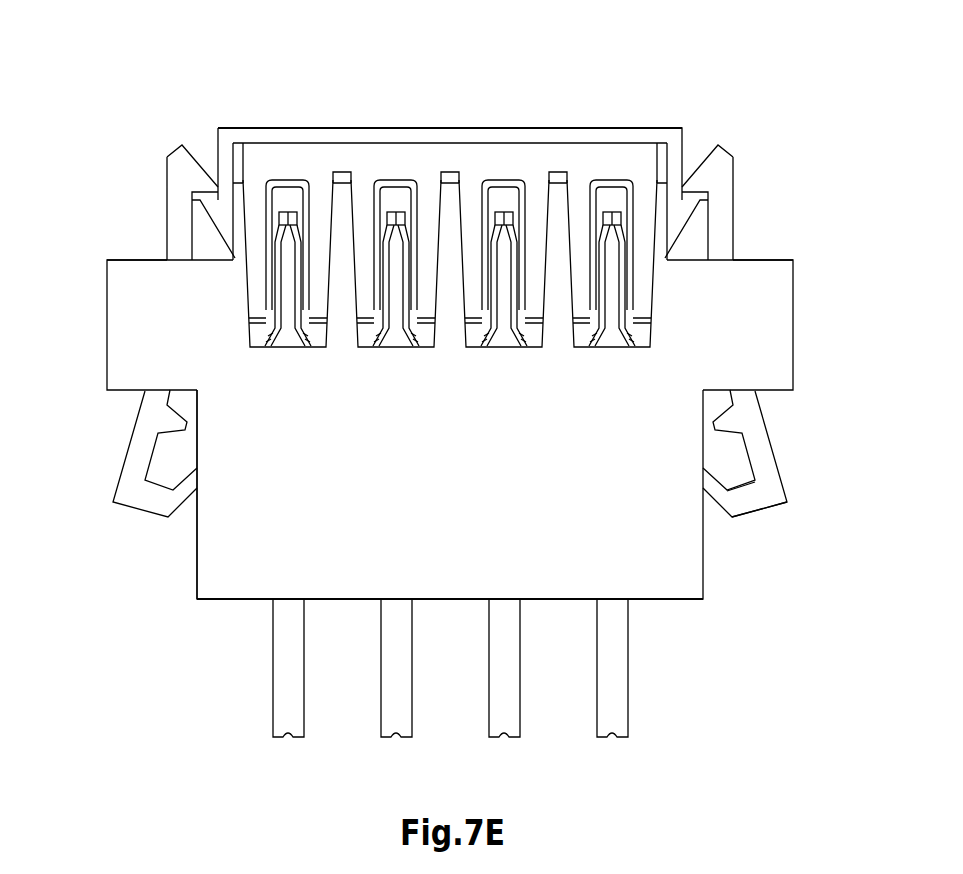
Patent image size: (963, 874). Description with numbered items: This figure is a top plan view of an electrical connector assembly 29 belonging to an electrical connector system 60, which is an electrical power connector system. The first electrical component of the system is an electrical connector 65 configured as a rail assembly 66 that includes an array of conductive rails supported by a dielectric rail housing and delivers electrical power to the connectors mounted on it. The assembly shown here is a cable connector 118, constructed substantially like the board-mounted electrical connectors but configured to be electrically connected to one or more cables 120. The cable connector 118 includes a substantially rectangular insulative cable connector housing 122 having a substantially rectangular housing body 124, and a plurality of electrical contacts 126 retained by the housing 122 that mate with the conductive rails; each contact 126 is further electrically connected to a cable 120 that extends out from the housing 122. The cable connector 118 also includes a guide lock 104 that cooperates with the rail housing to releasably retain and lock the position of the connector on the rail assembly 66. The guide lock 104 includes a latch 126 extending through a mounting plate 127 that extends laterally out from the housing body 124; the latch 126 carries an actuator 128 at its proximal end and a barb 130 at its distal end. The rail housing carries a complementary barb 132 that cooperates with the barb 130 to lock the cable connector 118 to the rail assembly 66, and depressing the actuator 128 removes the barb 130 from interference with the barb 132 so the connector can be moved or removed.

The electrical connector assembly 29 is at (185, 625).
The electrical connector system 60 is at (138, 130).
The electrical connector 65 is at (679, 117).
The rail assembly 66 is at (267, 118).
The guide lock 104 is at (99, 314).
The cable connector 118 is at (712, 571).
The cable 120 is at (613, 672).
The cable connector housing 122 is at (197, 553).
The housing body 124 is at (673, 600).
The electrical contact 126 is at (295, 214).
The mounting plate 127 is at (140, 256).
The actuator 128 is at (783, 488).
The barb 130 is at (190, 153).
The barb 132 is at (210, 216).